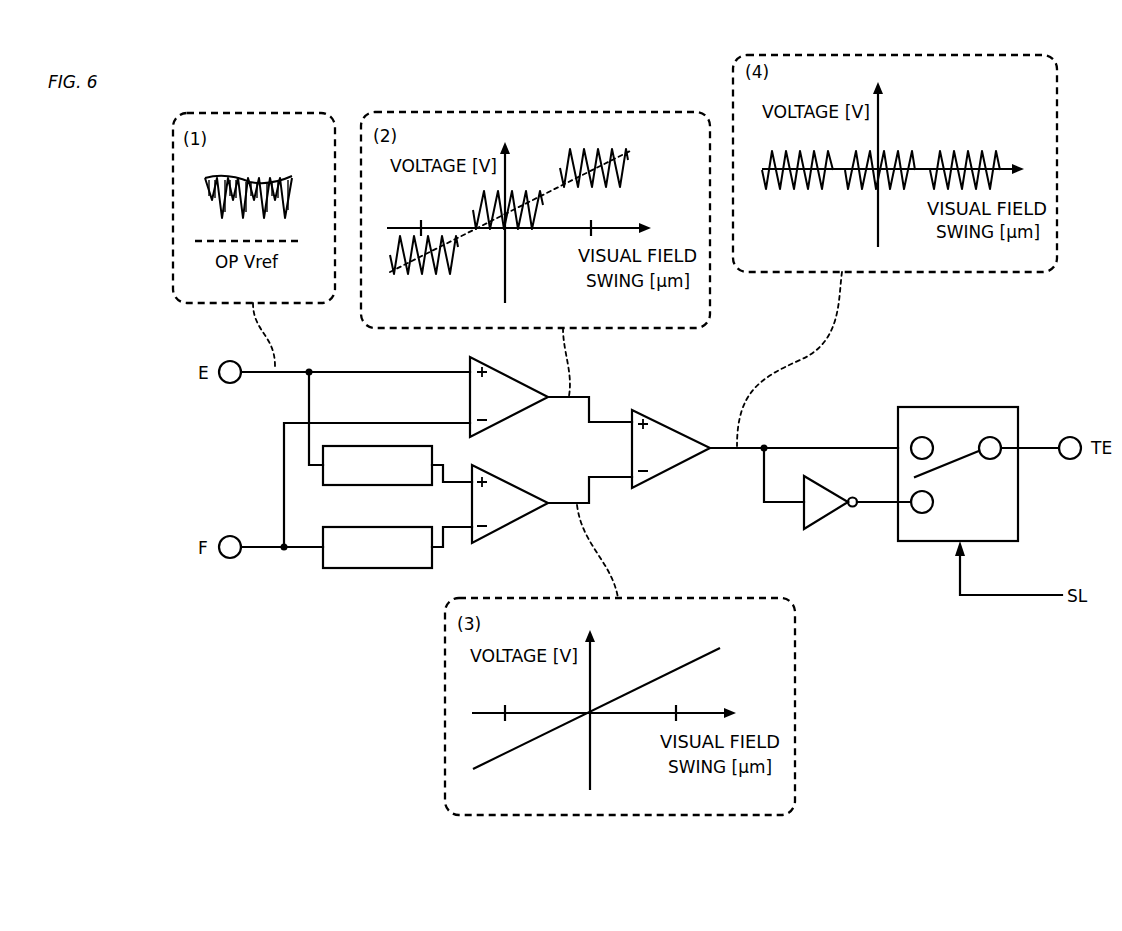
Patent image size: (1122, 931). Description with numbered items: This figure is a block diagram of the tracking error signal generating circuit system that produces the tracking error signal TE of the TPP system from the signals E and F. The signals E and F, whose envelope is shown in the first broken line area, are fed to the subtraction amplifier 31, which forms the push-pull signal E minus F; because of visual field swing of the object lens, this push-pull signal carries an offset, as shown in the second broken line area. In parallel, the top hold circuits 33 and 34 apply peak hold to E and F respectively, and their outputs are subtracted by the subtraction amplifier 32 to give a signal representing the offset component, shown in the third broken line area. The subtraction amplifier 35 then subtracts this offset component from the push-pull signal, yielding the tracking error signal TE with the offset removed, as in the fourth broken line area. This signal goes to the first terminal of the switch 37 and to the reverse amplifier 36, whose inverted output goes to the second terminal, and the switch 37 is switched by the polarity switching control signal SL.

The subtraction amplifier 31 is at (521, 411).
The subtraction amplifier 32 is at (521, 518).
The top hold circuit 33 is at (347, 486).
The top hold circuit 34 is at (375, 568).
The subtraction amplifier 35 is at (672, 429).
The reverse amplifier 36 is at (826, 516).
The switch 37 is at (958, 407).